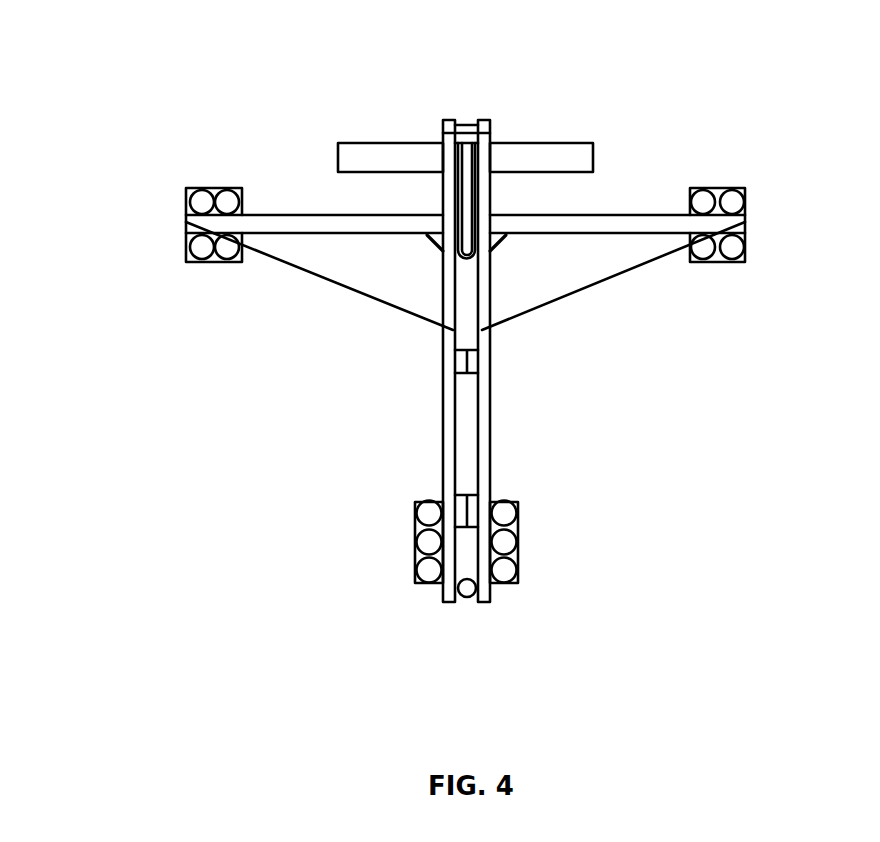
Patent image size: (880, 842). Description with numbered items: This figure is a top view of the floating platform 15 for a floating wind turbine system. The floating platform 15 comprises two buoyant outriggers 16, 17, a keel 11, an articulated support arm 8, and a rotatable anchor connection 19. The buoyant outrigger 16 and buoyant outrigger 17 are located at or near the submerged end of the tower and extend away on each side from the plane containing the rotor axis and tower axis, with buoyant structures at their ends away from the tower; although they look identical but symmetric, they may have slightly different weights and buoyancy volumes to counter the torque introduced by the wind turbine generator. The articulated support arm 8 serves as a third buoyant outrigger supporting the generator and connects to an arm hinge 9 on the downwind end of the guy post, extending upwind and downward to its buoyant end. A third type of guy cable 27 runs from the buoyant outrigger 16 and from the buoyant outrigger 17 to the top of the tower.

The articulated support arm 8 is at (433, 463).
The arm hinge 9 is at (432, 135).
The keel 11 is at (528, 138).
The floating platform 15 is at (277, 359).
The buoyant outrigger 16 is at (263, 170).
The buoyant outrigger 17 is at (673, 167).
The rotatable anchor connection 19 is at (470, 608).
The guy cable 27 is at (390, 318).